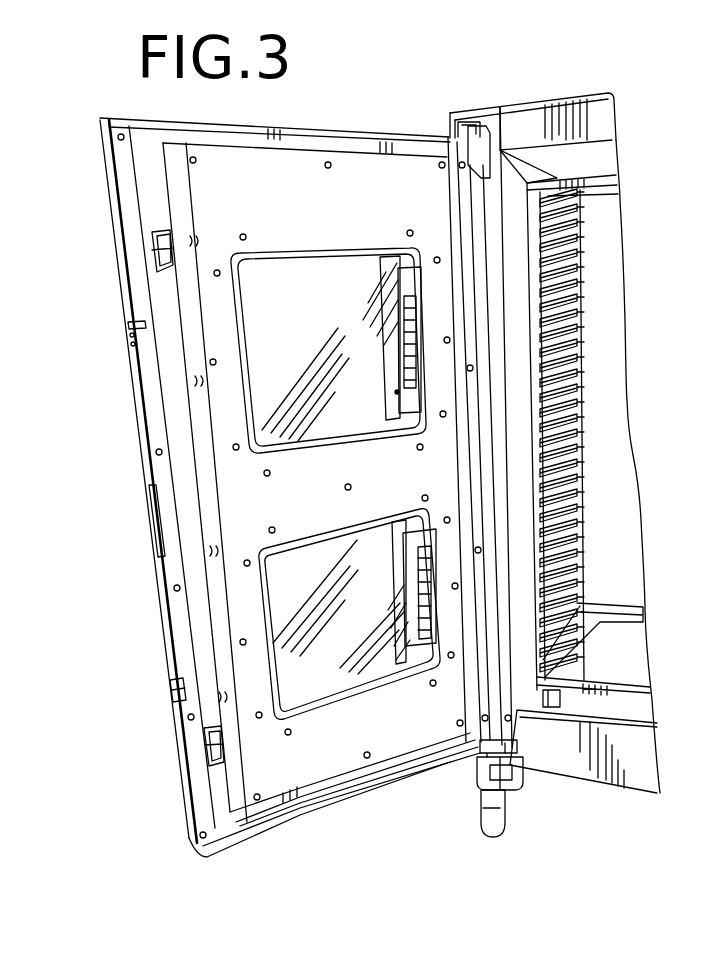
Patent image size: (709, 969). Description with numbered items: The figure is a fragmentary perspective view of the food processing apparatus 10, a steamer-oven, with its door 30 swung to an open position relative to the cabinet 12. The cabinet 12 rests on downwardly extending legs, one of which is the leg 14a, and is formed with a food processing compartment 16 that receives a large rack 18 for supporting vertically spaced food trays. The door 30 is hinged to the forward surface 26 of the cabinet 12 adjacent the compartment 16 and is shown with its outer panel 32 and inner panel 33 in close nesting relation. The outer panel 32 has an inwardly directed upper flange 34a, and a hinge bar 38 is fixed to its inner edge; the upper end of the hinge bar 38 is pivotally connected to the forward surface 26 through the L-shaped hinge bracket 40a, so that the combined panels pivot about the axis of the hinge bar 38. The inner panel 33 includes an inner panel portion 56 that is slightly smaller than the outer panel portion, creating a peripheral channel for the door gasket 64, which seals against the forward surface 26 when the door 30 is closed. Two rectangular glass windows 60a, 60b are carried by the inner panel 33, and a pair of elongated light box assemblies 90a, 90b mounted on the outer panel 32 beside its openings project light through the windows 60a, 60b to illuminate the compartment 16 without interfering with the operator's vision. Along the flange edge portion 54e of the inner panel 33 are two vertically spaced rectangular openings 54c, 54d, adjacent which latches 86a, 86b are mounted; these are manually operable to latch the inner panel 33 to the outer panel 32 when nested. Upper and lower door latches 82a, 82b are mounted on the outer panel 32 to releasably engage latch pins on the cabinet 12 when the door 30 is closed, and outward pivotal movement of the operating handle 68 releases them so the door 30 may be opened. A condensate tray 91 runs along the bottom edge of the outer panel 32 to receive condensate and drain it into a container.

The food processing apparatus 10 is at (458, 88).
The cabinet 12 is at (575, 92).
The leg 14a is at (493, 806).
The food processing compartment 16 is at (592, 162).
The rack 18 is at (600, 525).
The forward surface 26 is at (606, 96).
The door 30 is at (95, 160).
The outer panel 32 is at (136, 441).
The inner panel 33 is at (322, 758).
The upper flange 34a is at (186, 652).
The hinge bar 38 is at (478, 160).
The hinge bracket 40a is at (460, 128).
The rectangular opening 54c is at (157, 231).
The rectangular opening 54d is at (212, 772).
The flange edge portion 54e is at (197, 598).
The inner panel portion 56 is at (388, 735).
The window 60a is at (298, 413).
The window 60b is at (318, 667).
The door gasket 64 is at (238, 775).
The operating handle 68 is at (149, 523).
The door latch 82a is at (130, 326).
The door latch 82b is at (186, 698).
The latch 86a is at (160, 250).
The latch 86b is at (210, 752).
The light box assembly 90a is at (403, 262).
The light box assembly 90b is at (420, 650).
The condensate tray 91 is at (254, 836).